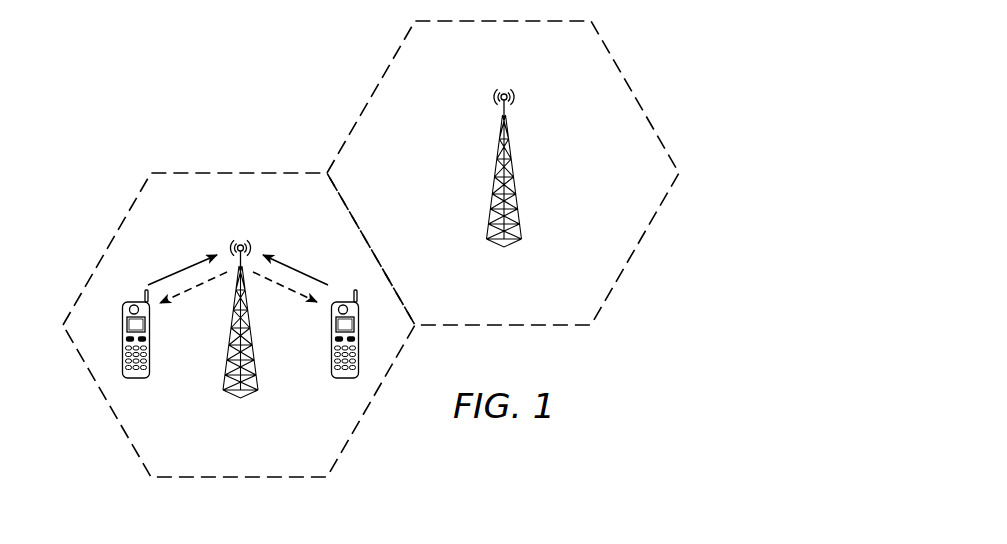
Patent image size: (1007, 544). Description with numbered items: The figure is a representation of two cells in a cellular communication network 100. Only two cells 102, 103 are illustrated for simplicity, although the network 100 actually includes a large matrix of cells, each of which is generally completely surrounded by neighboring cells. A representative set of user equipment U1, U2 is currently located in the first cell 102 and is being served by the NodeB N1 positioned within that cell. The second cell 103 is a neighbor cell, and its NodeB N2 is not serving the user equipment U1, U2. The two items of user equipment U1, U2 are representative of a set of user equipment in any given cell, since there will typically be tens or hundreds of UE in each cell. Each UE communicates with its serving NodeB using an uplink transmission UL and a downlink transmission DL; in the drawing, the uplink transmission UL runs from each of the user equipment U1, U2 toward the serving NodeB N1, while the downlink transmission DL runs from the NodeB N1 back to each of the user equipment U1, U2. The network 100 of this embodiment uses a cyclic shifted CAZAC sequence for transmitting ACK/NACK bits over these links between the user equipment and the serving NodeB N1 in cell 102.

The cellular communication network 100 is at (229, 75).
The cell 102 is at (111, 239).
The cell 103 is at (633, 86).
The NodeB N1 is at (240, 331).
The NodeB N2 is at (504, 180).
The user equipment U1 is at (345, 347).
The user equipment U2 is at (136, 347).
The uplink transmission UL is at (238, 265).
The downlink transmission DL is at (238, 293).